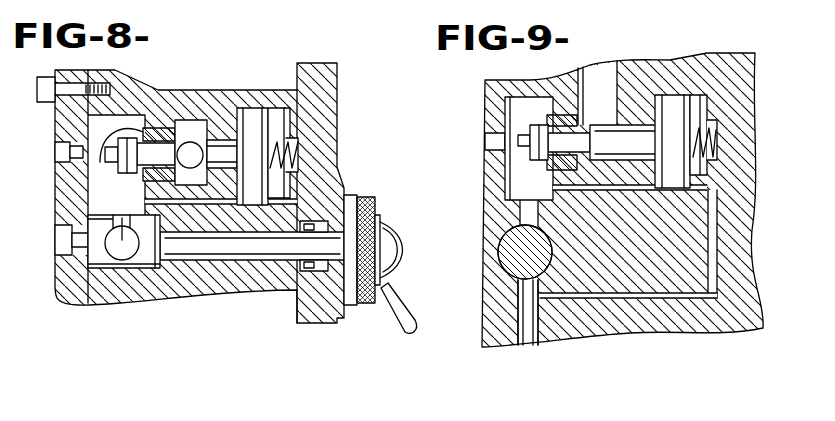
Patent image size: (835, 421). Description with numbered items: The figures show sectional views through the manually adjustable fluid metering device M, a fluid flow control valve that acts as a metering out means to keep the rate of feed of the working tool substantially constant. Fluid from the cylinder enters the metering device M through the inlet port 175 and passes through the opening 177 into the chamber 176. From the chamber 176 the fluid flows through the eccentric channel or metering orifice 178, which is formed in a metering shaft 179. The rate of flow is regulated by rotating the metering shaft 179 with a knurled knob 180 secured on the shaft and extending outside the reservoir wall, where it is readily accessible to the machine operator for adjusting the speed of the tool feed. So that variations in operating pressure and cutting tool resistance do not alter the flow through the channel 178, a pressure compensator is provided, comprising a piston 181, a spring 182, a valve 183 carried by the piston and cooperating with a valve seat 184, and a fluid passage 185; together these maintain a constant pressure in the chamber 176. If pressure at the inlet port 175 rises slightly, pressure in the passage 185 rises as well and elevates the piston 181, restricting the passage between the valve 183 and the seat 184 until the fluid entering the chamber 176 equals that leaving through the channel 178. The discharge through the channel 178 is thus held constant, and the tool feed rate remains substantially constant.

In FIG. 8, the inlet port 175 is at (190, 133).
In FIG. 9, the inlet port 175 is at (590, 74).
In FIG. 8, the chamber 176 is at (97, 132).
In FIG. 9, the chamber 176 is at (517, 175).
In FIG. 8, the opening 177 is at (148, 129).
In FIG. 9, the opening 177 is at (563, 121).
In FIG. 8, the eccentric channel 178 is at (118, 218).
In FIG. 9, the eccentric channel 178 is at (553, 262).
In FIG. 8, the metering shaft 179 is at (142, 268).
In FIG. 9, the metering shaft 179 is at (510, 272).
In FIG. 8, the knurled knob 180 is at (373, 203).
In FIG. 8, the piston 181 is at (253, 108).
In FIG. 9, the piston 181 is at (675, 96).
In FIG. 8, the spring 182 is at (294, 150).
In FIG. 9, the spring 182 is at (713, 137).
In FIG. 8, the valve 183 is at (114, 163).
In FIG. 9, the valve 183 is at (533, 142).
In FIG. 8, the valve seat 184 is at (141, 175).
In FIG. 8, the fluid passage 185 is at (217, 200).
In FIG. 9, the fluid passage 185 is at (620, 191).
In FIG. 8, the metering device M is at (348, 163).
In FIG. 9, the metering device M is at (658, 341).